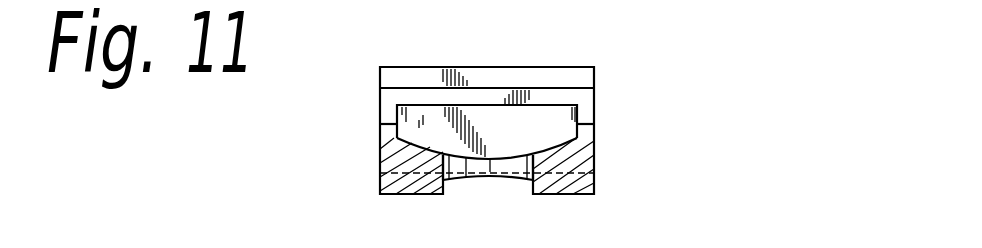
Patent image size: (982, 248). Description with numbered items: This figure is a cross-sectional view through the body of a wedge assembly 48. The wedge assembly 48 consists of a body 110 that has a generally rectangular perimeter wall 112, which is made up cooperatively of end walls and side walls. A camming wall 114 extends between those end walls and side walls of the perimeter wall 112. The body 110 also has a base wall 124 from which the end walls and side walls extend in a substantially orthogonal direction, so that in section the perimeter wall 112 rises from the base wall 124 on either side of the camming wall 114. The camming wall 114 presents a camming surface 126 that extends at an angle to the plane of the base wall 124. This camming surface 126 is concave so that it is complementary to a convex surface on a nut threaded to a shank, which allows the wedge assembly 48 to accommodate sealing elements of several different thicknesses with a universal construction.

The wedge assembly 48 is at (380, 139).
The camming surface 126 is at (423, 142).
The camming wall 114 is at (500, 163).
The body 110 is at (380, 162).
The perimeter wall 112 is at (595, 148).
The base wall 124 is at (566, 193).